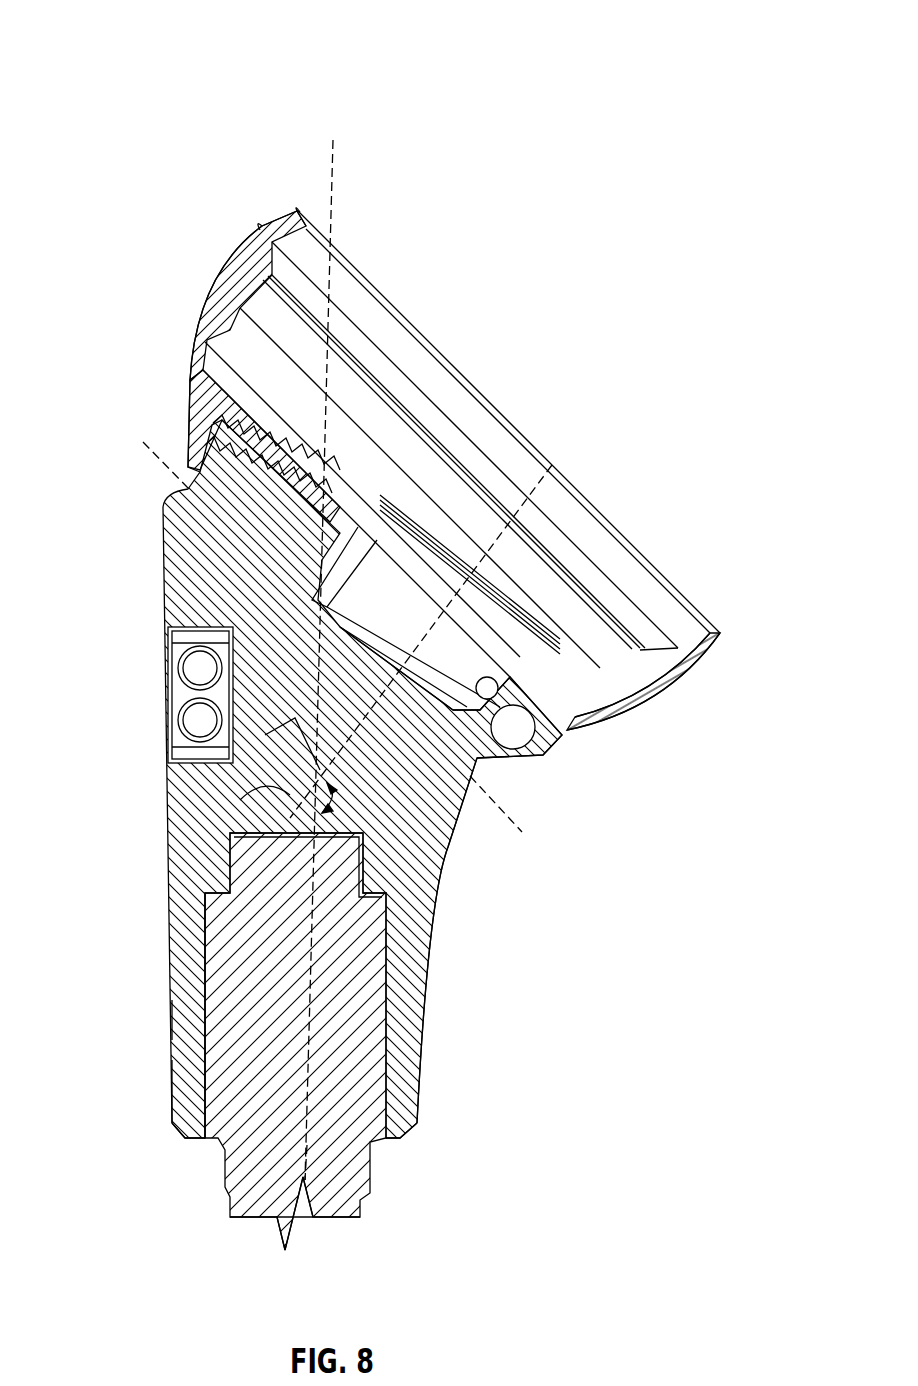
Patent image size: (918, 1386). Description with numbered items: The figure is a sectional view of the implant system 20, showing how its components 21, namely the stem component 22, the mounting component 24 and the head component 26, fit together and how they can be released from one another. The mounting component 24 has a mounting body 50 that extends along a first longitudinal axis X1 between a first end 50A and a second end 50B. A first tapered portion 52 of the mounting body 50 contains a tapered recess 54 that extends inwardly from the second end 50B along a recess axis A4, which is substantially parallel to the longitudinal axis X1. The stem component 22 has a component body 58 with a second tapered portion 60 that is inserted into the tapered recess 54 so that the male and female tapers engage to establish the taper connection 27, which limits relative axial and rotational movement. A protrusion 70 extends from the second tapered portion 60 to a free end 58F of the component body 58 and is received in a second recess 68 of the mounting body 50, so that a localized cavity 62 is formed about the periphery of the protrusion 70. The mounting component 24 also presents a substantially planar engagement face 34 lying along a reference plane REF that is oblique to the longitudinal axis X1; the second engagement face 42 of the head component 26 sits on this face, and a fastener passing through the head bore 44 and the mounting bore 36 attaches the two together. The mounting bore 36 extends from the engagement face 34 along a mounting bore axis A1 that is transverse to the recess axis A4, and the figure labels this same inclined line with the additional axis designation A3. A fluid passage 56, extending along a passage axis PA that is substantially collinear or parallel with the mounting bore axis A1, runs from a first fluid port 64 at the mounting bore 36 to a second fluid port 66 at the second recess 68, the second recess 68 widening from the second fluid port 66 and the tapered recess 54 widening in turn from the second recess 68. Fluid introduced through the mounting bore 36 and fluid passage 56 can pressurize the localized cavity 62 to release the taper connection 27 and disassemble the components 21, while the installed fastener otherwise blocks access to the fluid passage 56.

The implant system 20 is at (108, 26).
The components 21 is at (373, 716).
The head component 26 is at (236, 262).
The mounting component 24 is at (156, 576).
The stem component 22 is at (343, 1240).
The taper connection 27 is at (185, 1018).
The first engagement face 34 is at (480, 758).
The mounting bore 36 is at (445, 840).
The second engagement face 42 is at (472, 775).
The head bore 44 is at (567, 733).
The mounting body 50 is at (180, 843).
The first end 50A is at (190, 440).
The second end 50B is at (418, 1105).
The first tapered portion 52 is at (185, 1032).
The tapered recess 54 is at (205, 1075).
The fluid passage 56 is at (233, 752).
The component body 58 is at (257, 1193).
The free end 58F is at (237, 748).
The second tapered portion 60 is at (205, 1120).
The localized cavity 62 is at (227, 888).
The first fluid port 64 is at (232, 655).
The second fluid port 66 is at (262, 805).
The second recess 68 is at (249, 1041).
The protrusion 70 is at (245, 885).
The passage axis PA is at (233, 718).
The first longitudinal axis X1 is at (332, 165).
The mounting bore axis A1 is at (538, 486).
The spray axis A3 is at (480, 631).
The recess axis A4 is at (307, 1145).
The reference plane REF is at (517, 830).